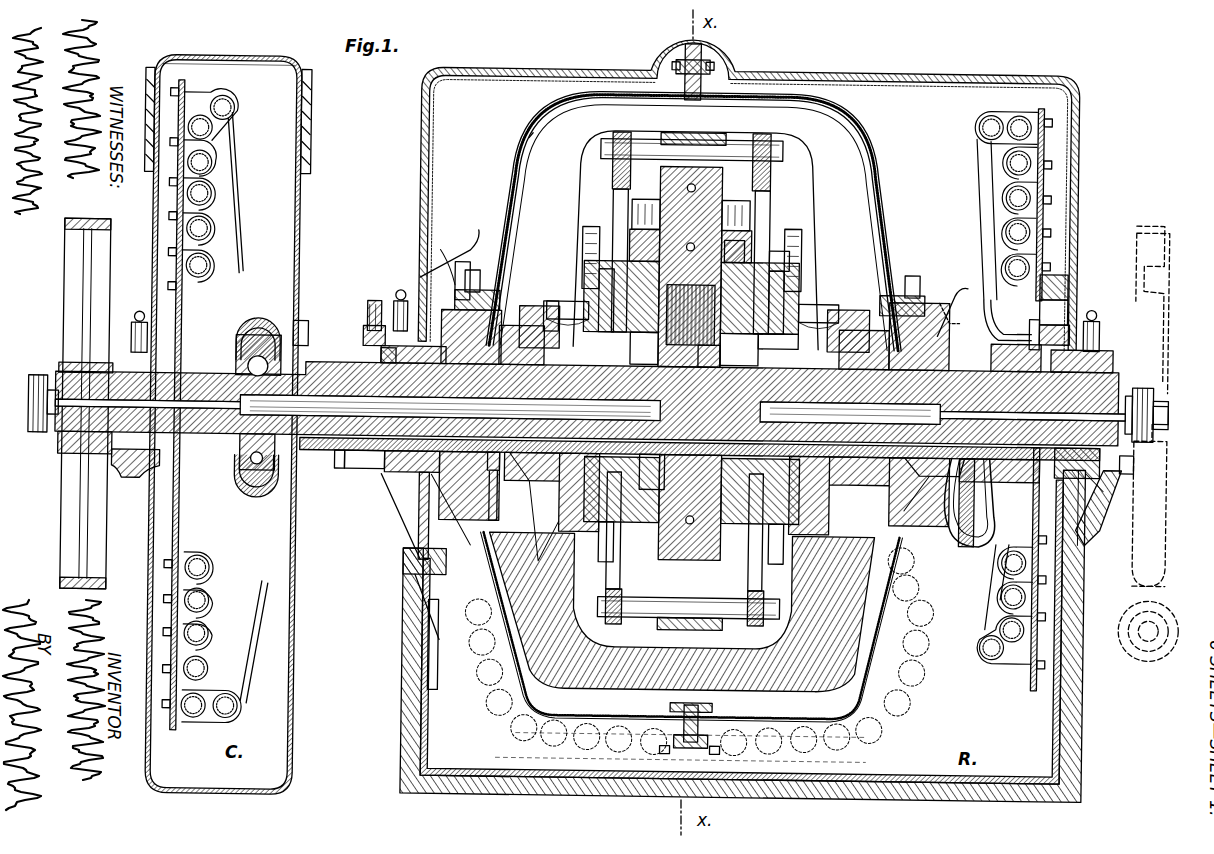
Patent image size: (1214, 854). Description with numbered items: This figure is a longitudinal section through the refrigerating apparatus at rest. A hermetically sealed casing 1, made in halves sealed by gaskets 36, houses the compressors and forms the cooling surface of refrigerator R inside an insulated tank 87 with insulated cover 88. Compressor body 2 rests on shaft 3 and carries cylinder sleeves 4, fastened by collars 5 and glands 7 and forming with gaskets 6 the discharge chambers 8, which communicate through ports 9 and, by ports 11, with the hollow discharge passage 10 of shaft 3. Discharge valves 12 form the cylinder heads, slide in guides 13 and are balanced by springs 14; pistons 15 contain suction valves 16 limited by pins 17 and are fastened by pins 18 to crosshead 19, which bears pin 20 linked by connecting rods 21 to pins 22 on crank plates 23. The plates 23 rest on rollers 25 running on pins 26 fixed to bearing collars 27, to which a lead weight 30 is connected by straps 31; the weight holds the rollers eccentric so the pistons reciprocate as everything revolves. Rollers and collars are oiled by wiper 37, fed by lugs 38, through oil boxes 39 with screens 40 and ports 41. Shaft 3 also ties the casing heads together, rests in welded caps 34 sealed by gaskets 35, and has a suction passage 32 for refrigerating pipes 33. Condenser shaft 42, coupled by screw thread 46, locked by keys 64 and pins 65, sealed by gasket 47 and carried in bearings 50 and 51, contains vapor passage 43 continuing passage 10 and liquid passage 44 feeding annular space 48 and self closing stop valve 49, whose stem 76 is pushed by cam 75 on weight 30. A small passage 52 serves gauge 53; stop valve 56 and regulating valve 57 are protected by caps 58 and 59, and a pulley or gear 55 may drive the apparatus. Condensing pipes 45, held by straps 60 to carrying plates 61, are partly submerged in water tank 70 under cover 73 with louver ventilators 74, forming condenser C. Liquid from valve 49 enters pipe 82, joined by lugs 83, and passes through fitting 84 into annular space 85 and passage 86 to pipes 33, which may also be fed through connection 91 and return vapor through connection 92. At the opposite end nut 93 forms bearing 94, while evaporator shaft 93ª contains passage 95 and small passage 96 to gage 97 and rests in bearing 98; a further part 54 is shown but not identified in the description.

The casing 1 is at (506, 162).
The compressor body 2 is at (492, 192).
The shaft 3 is at (402, 352).
The cylinder sleeves 4 is at (60, 420).
The collars 5 is at (600, 275).
The gaskets 6 is at (750, 280).
The glands 7 is at (742, 242).
The discharge chambers 8 is at (480, 522).
The ports 9 is at (640, 347).
The passage 10 is at (418, 502).
The ports 11 is at (490, 520).
The discharge valves 12 is at (690, 315).
The guides 13 is at (460, 587).
The springs 14 is at (858, 530).
The pistons 15 is at (652, 240).
The suction valves 16 is at (812, 142).
The pins 17 is at (745, 182).
The pins 18 is at (738, 242).
The crosshead 19 is at (845, 112).
The pin 20 is at (562, 99).
The connecting rods 21 is at (640, 150).
The pins 22 is at (800, 292).
The crank plates 23 is at (588, 270).
The rollers 25 is at (530, 300).
The pins 26 is at (475, 295).
The bearing collars 27 is at (430, 280).
The weight 30 is at (408, 640).
The straps 31 is at (536, 734).
The passage 32 is at (1062, 302).
The pipes 33 is at (566, 746).
The caps 34 is at (410, 520).
The gaskets 35 is at (372, 300).
The gaskets 36 is at (718, 78).
The wiper 37 is at (600, 74).
The lugs 38 is at (715, 704).
The oil boxes 39 is at (448, 278).
The screens 40 is at (556, 300).
The ports 41 is at (400, 300).
The shaft 42 is at (150, 482).
The passage 43 is at (318, 362).
The passage 44 is at (348, 453).
The pipes 45 is at (205, 130).
The screw thread 46 is at (385, 478).
The gasket 47 is at (398, 345).
The annular space 48 is at (400, 496).
The self closing stop valve 49 is at (388, 262).
The bearing 50 is at (392, 348).
The bearing 51 is at (112, 450).
The passage 52 is at (75, 437).
The gauge 53 is at (40, 375).
The knob 54 is at (1160, 408).
The pulley or gear 55 is at (80, 300).
The stop valve 56 is at (305, 318).
The combination regulating and stop valve 57 is at (250, 472).
The cap 58 is at (258, 322).
The cap 59 is at (265, 476).
The straps 60 is at (212, 96).
The carrying plates 61 is at (182, 300).
The keys 64 is at (418, 482).
The pins 65 is at (386, 358).
The tank 70 is at (300, 695).
The cover 73 is at (190, 58).
The louver shaped ventilators 74 is at (150, 68).
The cam 75 is at (415, 582).
The stem 76 is at (476, 262).
The pipe 82 is at (520, 200).
The lugs 83 is at (668, 82).
The connecting fitting 84 is at (1022, 272).
The annular space 85 is at (1082, 535).
The passage 86 is at (1042, 332).
The tank 87 is at (400, 698).
The insulated cover 88 is at (875, 70).
The connection 91 is at (600, 746).
The connection 92 is at (950, 300).
The nut 93 is at (1092, 350).
The bearing 94 is at (1046, 335).
The passage 95 is at (1160, 562).
The passage 96 is at (1100, 480).
The gage 97 is at (1140, 422).
The bearing 98 is at (1110, 465).